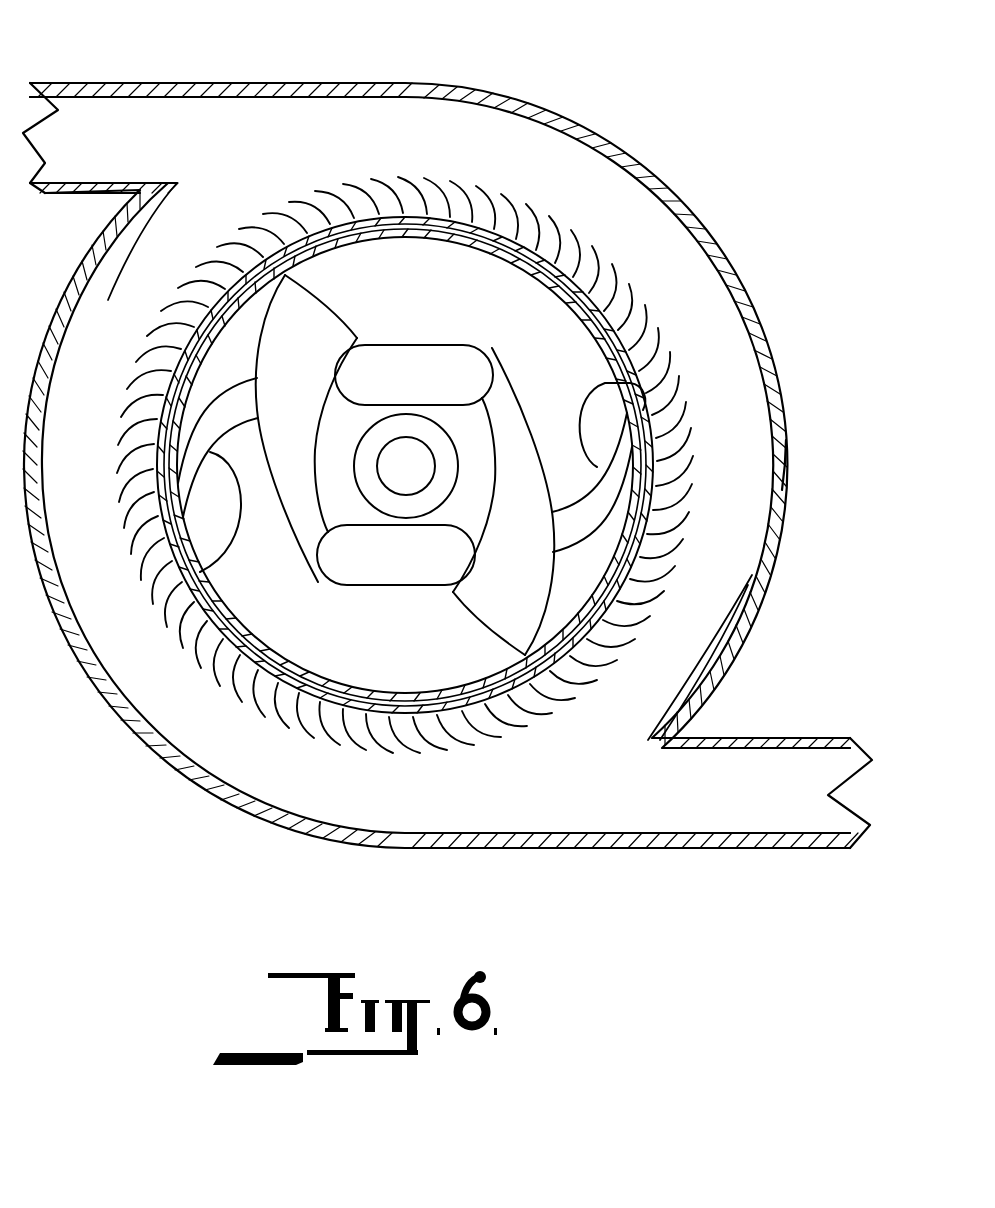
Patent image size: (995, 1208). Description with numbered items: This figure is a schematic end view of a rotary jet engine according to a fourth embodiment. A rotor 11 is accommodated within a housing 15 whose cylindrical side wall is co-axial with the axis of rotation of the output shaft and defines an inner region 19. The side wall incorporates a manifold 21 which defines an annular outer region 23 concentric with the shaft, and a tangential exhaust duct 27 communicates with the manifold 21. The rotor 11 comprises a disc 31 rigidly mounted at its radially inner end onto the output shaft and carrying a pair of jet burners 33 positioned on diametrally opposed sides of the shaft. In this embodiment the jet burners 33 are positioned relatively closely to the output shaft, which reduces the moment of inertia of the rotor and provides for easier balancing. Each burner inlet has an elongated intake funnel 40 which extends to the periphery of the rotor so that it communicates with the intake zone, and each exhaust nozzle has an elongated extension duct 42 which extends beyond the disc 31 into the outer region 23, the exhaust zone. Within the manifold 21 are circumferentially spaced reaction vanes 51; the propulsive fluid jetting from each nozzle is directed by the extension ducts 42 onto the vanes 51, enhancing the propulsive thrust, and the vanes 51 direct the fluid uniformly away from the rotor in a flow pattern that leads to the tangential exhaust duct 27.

The rotor 11 is at (410, 227).
The housing 15 is at (745, 296).
The inner region 19 is at (593, 290).
The manifold 21 is at (747, 632).
The annular outer region 23 is at (775, 432).
The tangential exhaust duct 27 is at (90, 113).
The disc 31 is at (520, 297).
The jet burners 33 is at (420, 397).
The intake funnel 40 is at (330, 317).
The extension duct 42 is at (647, 383).
The vanes 51 is at (633, 296).